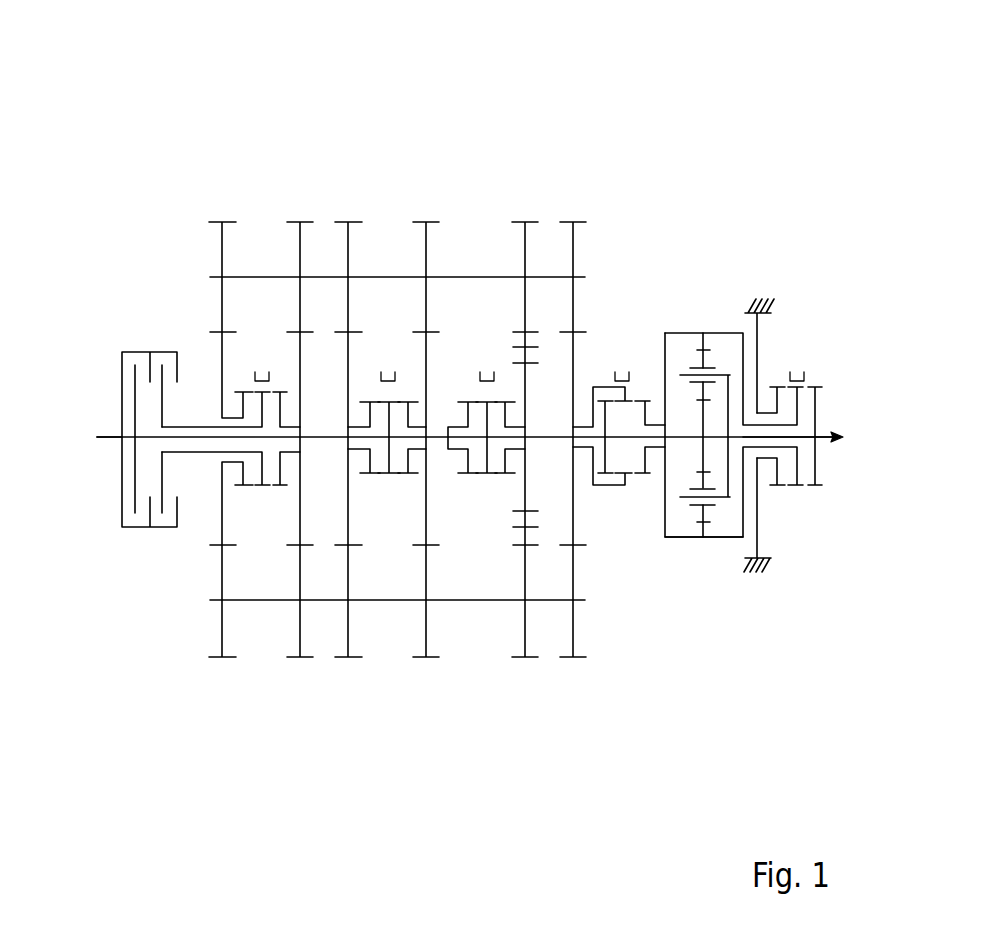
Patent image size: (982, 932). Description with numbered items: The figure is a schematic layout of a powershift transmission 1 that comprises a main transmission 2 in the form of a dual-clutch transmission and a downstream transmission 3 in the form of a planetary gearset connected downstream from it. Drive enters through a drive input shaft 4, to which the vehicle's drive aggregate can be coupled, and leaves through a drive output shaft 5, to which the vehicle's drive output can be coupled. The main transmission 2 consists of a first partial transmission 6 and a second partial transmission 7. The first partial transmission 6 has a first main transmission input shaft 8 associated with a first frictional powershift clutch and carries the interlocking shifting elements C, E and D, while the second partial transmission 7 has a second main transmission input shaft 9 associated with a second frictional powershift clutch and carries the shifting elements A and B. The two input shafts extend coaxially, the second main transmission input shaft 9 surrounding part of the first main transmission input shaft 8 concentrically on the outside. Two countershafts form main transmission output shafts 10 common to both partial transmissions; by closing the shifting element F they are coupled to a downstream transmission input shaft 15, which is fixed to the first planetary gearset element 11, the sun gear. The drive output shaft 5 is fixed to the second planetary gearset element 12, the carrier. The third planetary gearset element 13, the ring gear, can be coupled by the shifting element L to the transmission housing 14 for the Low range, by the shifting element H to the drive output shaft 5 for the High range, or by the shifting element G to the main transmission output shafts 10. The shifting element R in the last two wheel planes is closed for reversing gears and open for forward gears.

The powershift transmission 1 is at (449, 439).
The main transmission 2 is at (382, 397).
The downstream transmission 3 is at (722, 491).
The drive input shaft 4 is at (110, 437).
The drive output shaft 5 is at (828, 434).
The first partial transmission 6 is at (387, 399).
The second partial transmission 7 is at (323, 196).
The first main transmission input shaft 8 is at (205, 430).
The second main transmission input shaft 9 is at (190, 453).
The main transmission output shaft 10 is at (545, 275).
The first planetary gearset element 11 is at (702, 453).
The second planetary gearset element 12 is at (722, 498).
The third planetary gearset element 13 is at (700, 526).
The transmission housing 14 is at (763, 302).
The downstream transmission input shaft 15 is at (655, 447).